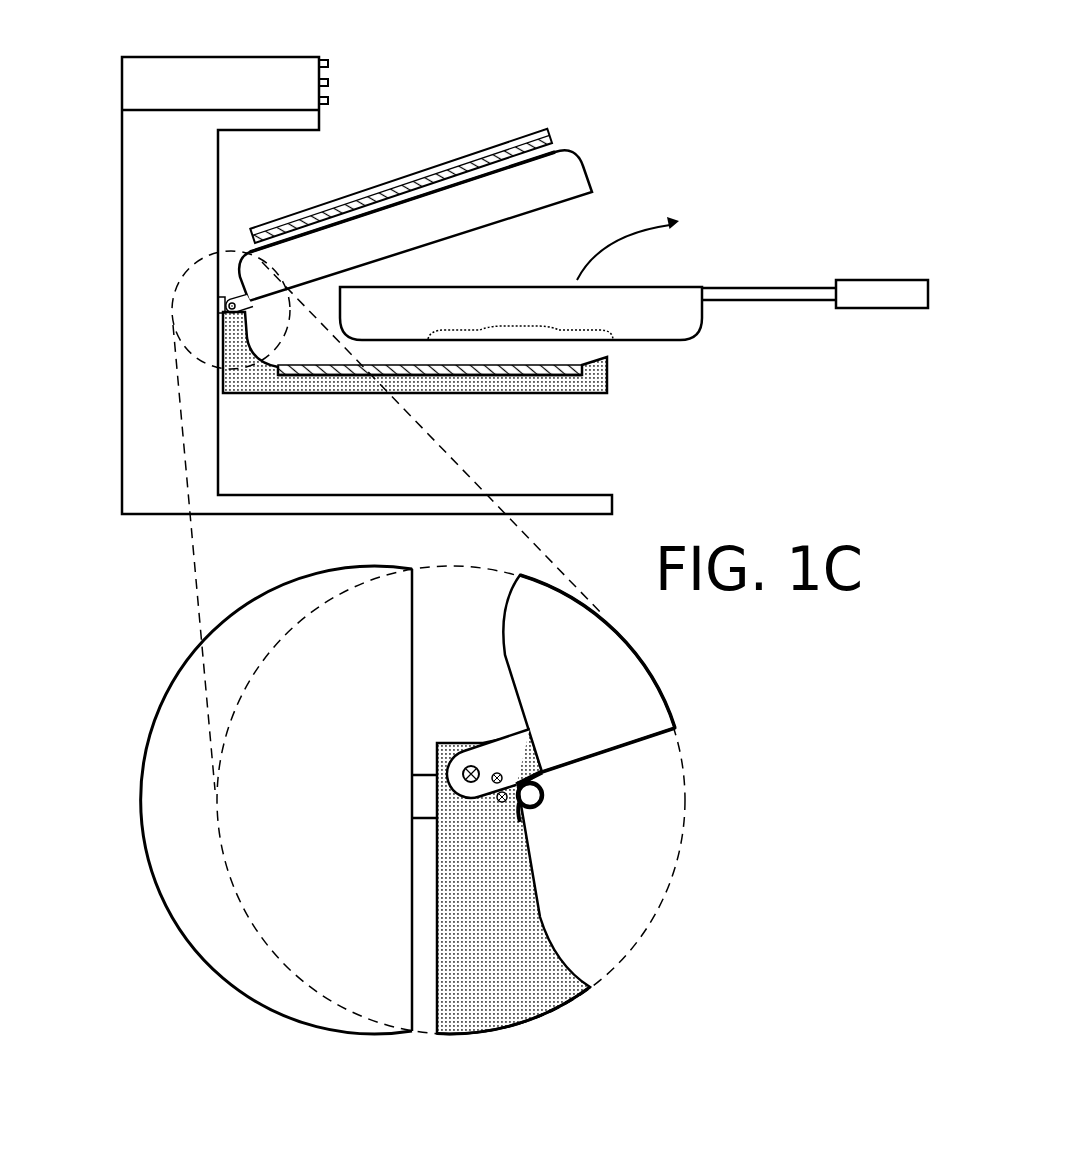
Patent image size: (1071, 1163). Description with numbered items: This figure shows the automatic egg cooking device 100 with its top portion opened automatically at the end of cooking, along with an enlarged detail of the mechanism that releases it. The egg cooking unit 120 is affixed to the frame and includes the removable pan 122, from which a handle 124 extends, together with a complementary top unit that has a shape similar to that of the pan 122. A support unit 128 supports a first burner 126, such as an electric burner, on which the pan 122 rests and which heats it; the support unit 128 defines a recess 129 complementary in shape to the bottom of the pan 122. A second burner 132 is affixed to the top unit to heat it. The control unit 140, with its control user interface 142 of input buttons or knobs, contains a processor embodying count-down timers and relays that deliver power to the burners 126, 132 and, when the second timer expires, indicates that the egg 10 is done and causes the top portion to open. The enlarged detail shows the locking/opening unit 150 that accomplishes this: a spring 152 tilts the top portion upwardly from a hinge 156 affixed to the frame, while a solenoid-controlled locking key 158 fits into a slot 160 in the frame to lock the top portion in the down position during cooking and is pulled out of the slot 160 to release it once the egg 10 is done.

The automatic egg cooking device 100 is at (729, 95).
The egg cooking unit 120 is at (636, 175).
The removable pan 122 is at (608, 322).
The handle 124 is at (864, 282).
The first burner 126 is at (508, 376).
The support unit 128 is at (333, 395).
The recess 129 is at (325, 356).
The second burner 132 is at (448, 178).
The control unit 140 is at (178, 57).
The control user interface 142 is at (328, 82).
The egg 10 is at (470, 330).
The locking/opening unit 150 is at (484, 697).
The spring 152 is at (545, 800).
The hinge 156 is at (466, 766).
The solenoid-controlled locking key 158 is at (504, 803).
The slot 160 is at (499, 773).